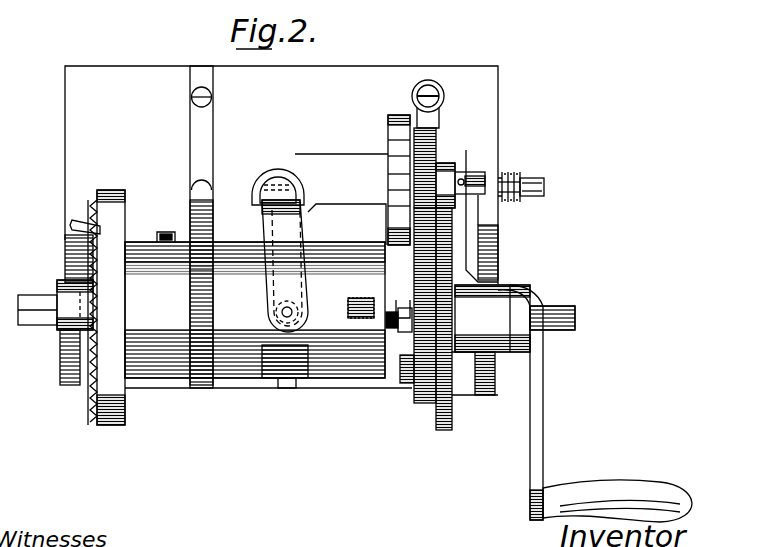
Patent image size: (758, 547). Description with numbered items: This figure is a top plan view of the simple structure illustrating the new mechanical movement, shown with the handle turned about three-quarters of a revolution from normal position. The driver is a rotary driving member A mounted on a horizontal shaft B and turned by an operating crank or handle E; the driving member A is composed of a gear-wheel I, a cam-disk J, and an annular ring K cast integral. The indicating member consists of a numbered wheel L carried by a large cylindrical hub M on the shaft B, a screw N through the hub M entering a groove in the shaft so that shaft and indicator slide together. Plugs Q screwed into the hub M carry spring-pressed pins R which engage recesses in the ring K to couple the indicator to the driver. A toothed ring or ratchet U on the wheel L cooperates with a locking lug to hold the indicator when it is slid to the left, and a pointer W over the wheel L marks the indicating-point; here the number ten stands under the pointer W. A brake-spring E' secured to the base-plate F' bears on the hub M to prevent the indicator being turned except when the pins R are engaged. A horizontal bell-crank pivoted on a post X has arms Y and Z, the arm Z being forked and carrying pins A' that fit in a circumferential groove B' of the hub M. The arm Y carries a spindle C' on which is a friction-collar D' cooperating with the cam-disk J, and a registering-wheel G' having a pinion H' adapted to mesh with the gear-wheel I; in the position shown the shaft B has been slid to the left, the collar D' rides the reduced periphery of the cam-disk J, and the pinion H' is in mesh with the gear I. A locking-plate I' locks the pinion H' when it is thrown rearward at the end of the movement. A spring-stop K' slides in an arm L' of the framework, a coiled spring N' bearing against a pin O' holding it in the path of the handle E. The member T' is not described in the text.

The base-plate F' is at (281, 227).
The brake-spring E' is at (186, 227).
The cylindrical hub M is at (255, 310).
The bell-crank arm Z is at (262, 206).
The post X is at (282, 168).
The bell-crank arm Y is at (330, 160).
The pins A' is at (310, 300).
The circumferential groove B' is at (287, 394).
The screw N is at (162, 259).
The registering-wheel G' is at (394, 170).
The pinion H' is at (447, 111).
The locking-plate I' is at (428, 156).
The gear-wheel I is at (407, 315).
The friction-collar D' is at (451, 169).
The cam-disk J is at (452, 412).
The spindle C' is at (472, 162).
The arm of the framework L' is at (493, 216).
The coiled spring N' is at (509, 176).
The pin O' is at (533, 174).
The spring-stop K' is at (536, 176).
The shaft B is at (520, 316).
The driving member A is at (449, 404).
The operating crank or handle E is at (595, 403).
The bracket T' is at (397, 291).
The sliding pins or plungers R is at (399, 330).
The plugs Q is at (374, 320).
The annular flange or ring K is at (400, 369).
The numbered wheel L is at (114, 298).
The toothed ring or ratchet U is at (94, 202).
The pointer W is at (76, 225).